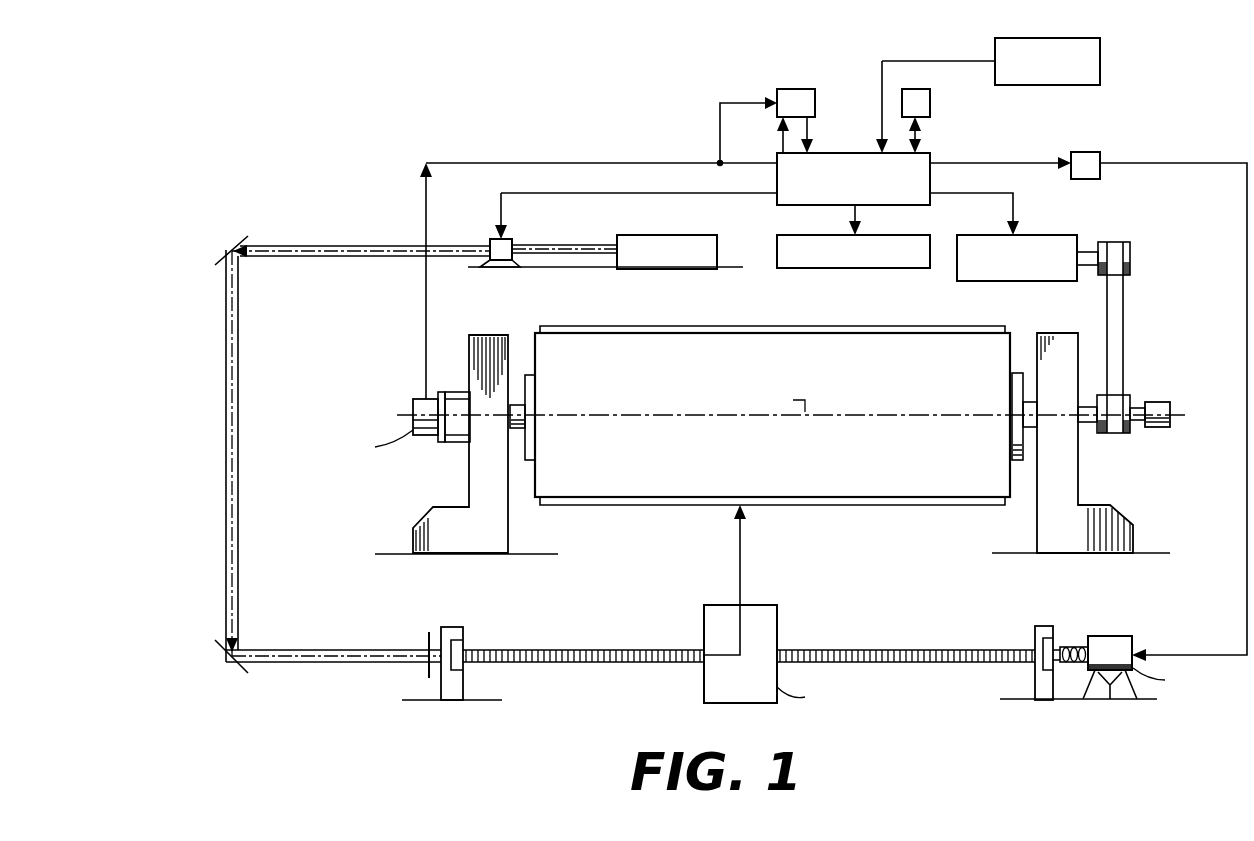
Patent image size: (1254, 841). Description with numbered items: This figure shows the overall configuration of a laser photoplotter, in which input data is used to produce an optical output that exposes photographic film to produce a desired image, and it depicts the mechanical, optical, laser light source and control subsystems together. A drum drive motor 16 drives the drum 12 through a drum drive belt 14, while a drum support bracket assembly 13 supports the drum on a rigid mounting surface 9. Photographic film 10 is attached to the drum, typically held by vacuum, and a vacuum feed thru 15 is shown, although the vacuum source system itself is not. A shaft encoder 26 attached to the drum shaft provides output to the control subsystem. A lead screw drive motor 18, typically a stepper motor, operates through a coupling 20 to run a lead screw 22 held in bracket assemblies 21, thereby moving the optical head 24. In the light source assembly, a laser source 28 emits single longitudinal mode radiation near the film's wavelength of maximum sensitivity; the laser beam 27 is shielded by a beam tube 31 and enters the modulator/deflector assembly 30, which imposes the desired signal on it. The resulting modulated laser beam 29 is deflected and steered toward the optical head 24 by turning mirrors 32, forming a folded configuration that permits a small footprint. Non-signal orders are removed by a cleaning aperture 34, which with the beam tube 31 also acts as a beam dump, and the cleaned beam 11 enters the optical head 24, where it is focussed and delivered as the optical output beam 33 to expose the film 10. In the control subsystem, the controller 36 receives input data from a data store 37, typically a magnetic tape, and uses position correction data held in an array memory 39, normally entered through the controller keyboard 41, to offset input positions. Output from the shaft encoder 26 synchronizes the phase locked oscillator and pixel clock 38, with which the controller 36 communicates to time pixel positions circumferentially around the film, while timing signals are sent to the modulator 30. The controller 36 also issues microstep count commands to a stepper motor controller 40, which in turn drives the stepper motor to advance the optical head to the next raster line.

The rigid mounting surface 9 is at (545, 554).
The photographic film 10 is at (833, 327).
The cleaned beam 11 is at (447, 658).
The drum 12 is at (1010, 333).
The drum support bracket assembly 13 is at (508, 521).
The drum drive belt 14 is at (1123, 355).
The vacuum feed thru 15 is at (1160, 402).
The drum drive motor 16 is at (1045, 235).
The lead screw drive motor 18 is at (1122, 640).
The coupling 20 is at (1073, 636).
The bracket assemblies 21 is at (460, 687).
The lead screw 22 is at (890, 650).
The optical head 24 is at (733, 700).
The shaft encoder 26 is at (413, 408).
The laser beam 27 is at (565, 245).
The laser source 28 is at (705, 235).
The modulated laser beam 29 is at (458, 248).
The modulator/deflector assembly 30 is at (512, 240).
The beam tube 31 is at (480, 262).
The turning mirrors 32 is at (230, 247).
The optical output beam 33 is at (740, 545).
The cleaning aperture 34 is at (427, 670).
The controller 36 is at (930, 153).
The data store 37 is at (1048, 88).
The phase locked oscillator and pixel clock 38 is at (815, 103).
The array memory 39 is at (930, 103).
The stepper motor controller 40 is at (1086, 152).
The controller keyboard 41 is at (890, 235).